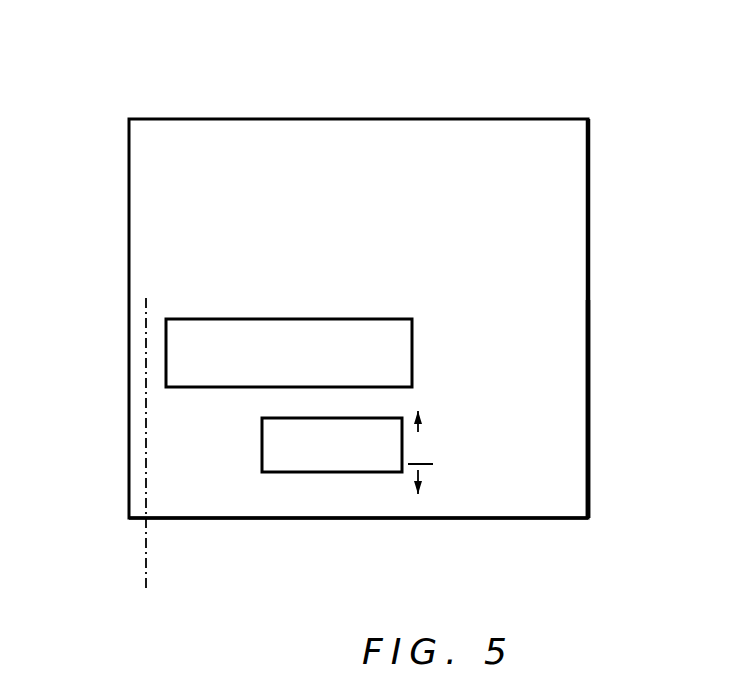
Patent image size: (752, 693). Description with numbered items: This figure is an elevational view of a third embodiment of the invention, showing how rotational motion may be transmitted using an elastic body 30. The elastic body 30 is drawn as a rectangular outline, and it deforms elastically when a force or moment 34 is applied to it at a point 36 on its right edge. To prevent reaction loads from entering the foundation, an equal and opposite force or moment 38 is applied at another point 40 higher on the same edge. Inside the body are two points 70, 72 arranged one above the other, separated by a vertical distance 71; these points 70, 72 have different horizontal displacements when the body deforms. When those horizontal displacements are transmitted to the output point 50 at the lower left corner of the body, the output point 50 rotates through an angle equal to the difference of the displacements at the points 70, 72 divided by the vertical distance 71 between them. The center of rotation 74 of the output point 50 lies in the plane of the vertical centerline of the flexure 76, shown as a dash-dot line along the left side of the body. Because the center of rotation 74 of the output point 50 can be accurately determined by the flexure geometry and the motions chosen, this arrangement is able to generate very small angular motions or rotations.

The elastic body 30 is at (507, 143).
The force or moment 34 is at (620, 380).
The point 36 is at (588, 417).
The equal and opposite force or moment 38 is at (613, 168).
The point 40 is at (588, 215).
The output point 50 is at (131, 498).
The point 70 is at (418, 498).
The vertical distance 71 is at (423, 452).
The point 72 is at (418, 407).
The center of rotation 74 is at (162, 334).
The flexure 76 is at (137, 366).